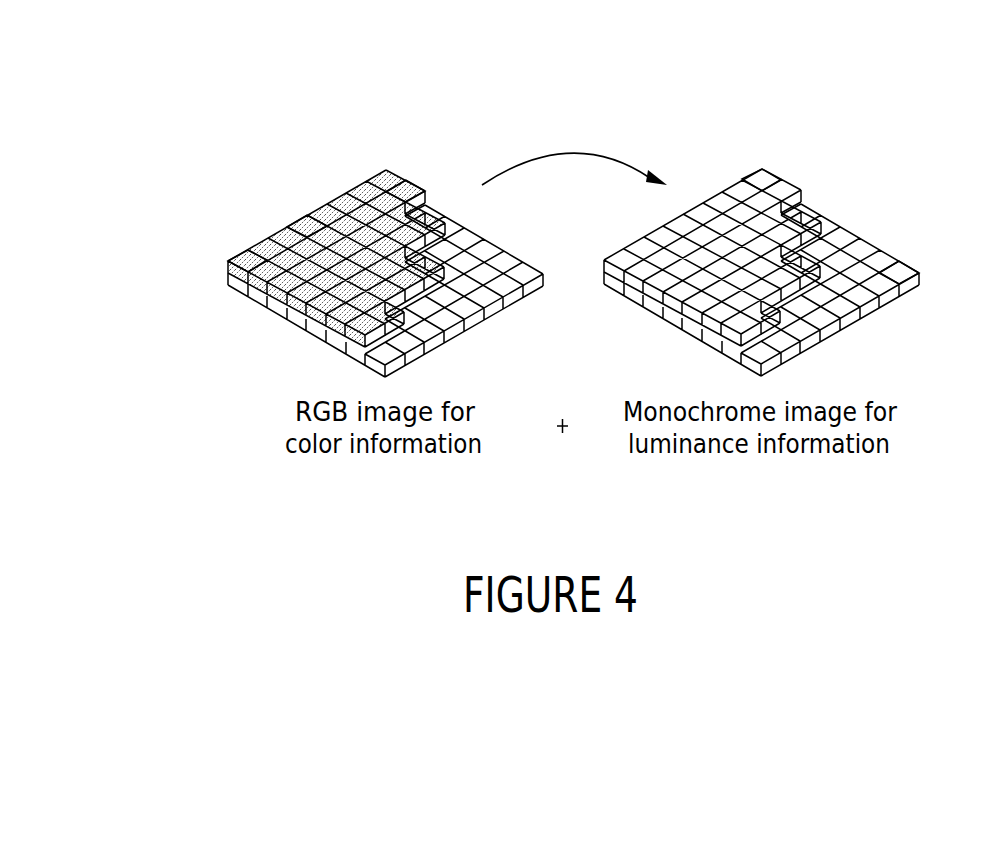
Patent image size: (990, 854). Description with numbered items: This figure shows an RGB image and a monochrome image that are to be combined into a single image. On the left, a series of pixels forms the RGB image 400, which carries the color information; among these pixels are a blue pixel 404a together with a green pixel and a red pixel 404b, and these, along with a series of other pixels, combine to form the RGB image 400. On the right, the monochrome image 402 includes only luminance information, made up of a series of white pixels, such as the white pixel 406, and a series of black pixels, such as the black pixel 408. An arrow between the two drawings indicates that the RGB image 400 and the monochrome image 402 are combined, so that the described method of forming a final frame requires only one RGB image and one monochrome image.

The RGB image 400 is at (134, 176).
The monochrome image 402 is at (914, 148).
The blue pixel 404a is at (232, 253).
The green pixel and red pixel 404b is at (295, 218).
The white pixel 406 is at (775, 173).
The black pixel 408 is at (912, 262).